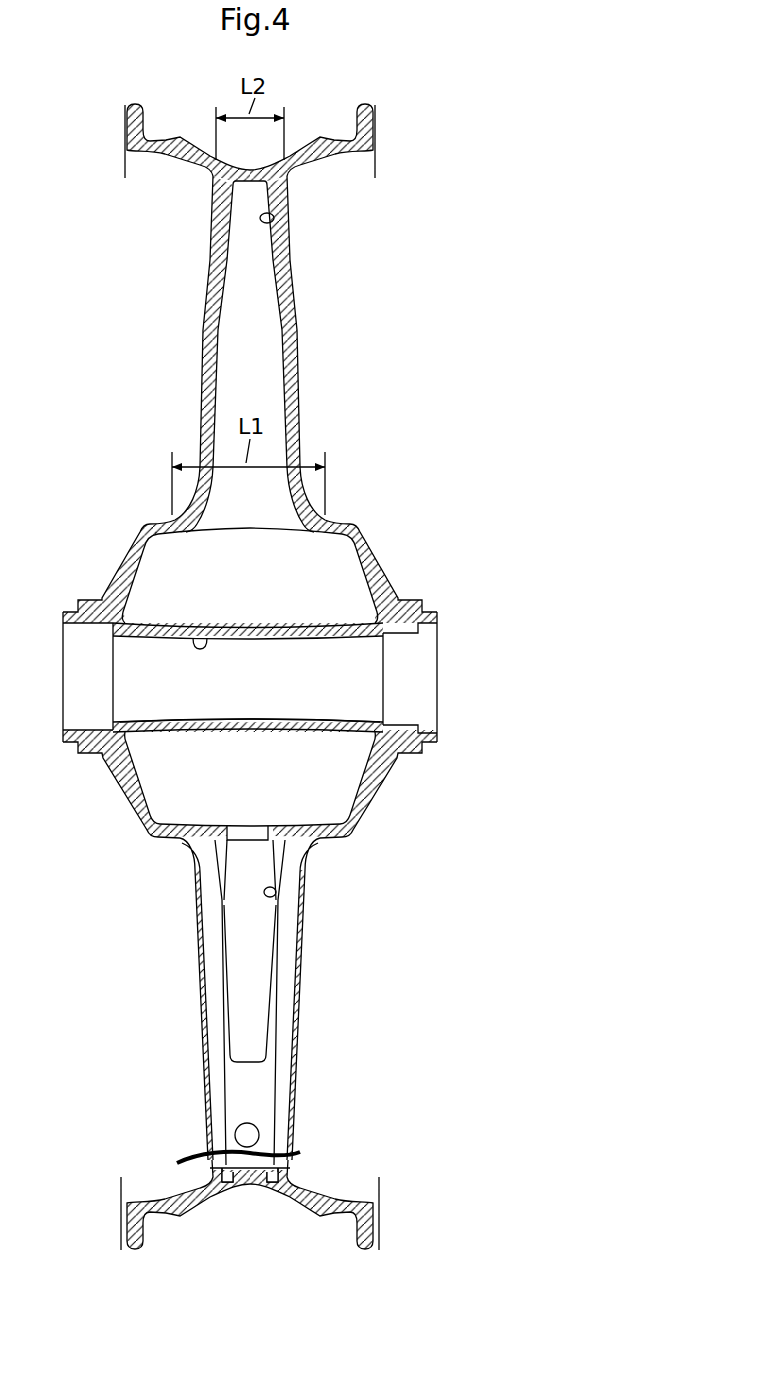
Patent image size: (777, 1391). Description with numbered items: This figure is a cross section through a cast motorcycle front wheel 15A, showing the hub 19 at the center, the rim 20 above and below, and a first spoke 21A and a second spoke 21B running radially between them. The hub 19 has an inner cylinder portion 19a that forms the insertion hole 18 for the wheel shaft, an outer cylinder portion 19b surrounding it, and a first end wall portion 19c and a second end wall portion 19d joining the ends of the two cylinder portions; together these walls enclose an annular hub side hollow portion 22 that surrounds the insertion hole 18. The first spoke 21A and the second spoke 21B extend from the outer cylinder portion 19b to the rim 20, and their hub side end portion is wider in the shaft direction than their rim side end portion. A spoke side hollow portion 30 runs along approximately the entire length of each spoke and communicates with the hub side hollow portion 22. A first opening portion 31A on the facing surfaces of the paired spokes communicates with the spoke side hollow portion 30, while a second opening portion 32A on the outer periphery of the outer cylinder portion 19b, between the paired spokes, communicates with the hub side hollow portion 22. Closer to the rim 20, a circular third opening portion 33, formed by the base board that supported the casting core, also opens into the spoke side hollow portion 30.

The rim 20 is at (178, 152).
The spoke side hollow portion 30 is at (274, 218).
The wheel 15A is at (302, 267).
The first spoke 21A is at (299, 375).
The hub side hollow portion 22 is at (190, 585).
The first end wall portion 19c is at (382, 578).
The hub 19 is at (134, 833).
The insertion hole 18 is at (215, 638).
The inner cylinder portion 19a is at (190, 724).
The second end wall portion 19d is at (128, 785).
The outer cylinder portion 19b is at (198, 841).
The second opening portion 32A is at (255, 828).
The first opening portion 31A is at (272, 896).
The second spoke 21B is at (282, 1032).
The third opening portion 33 is at (252, 1135).